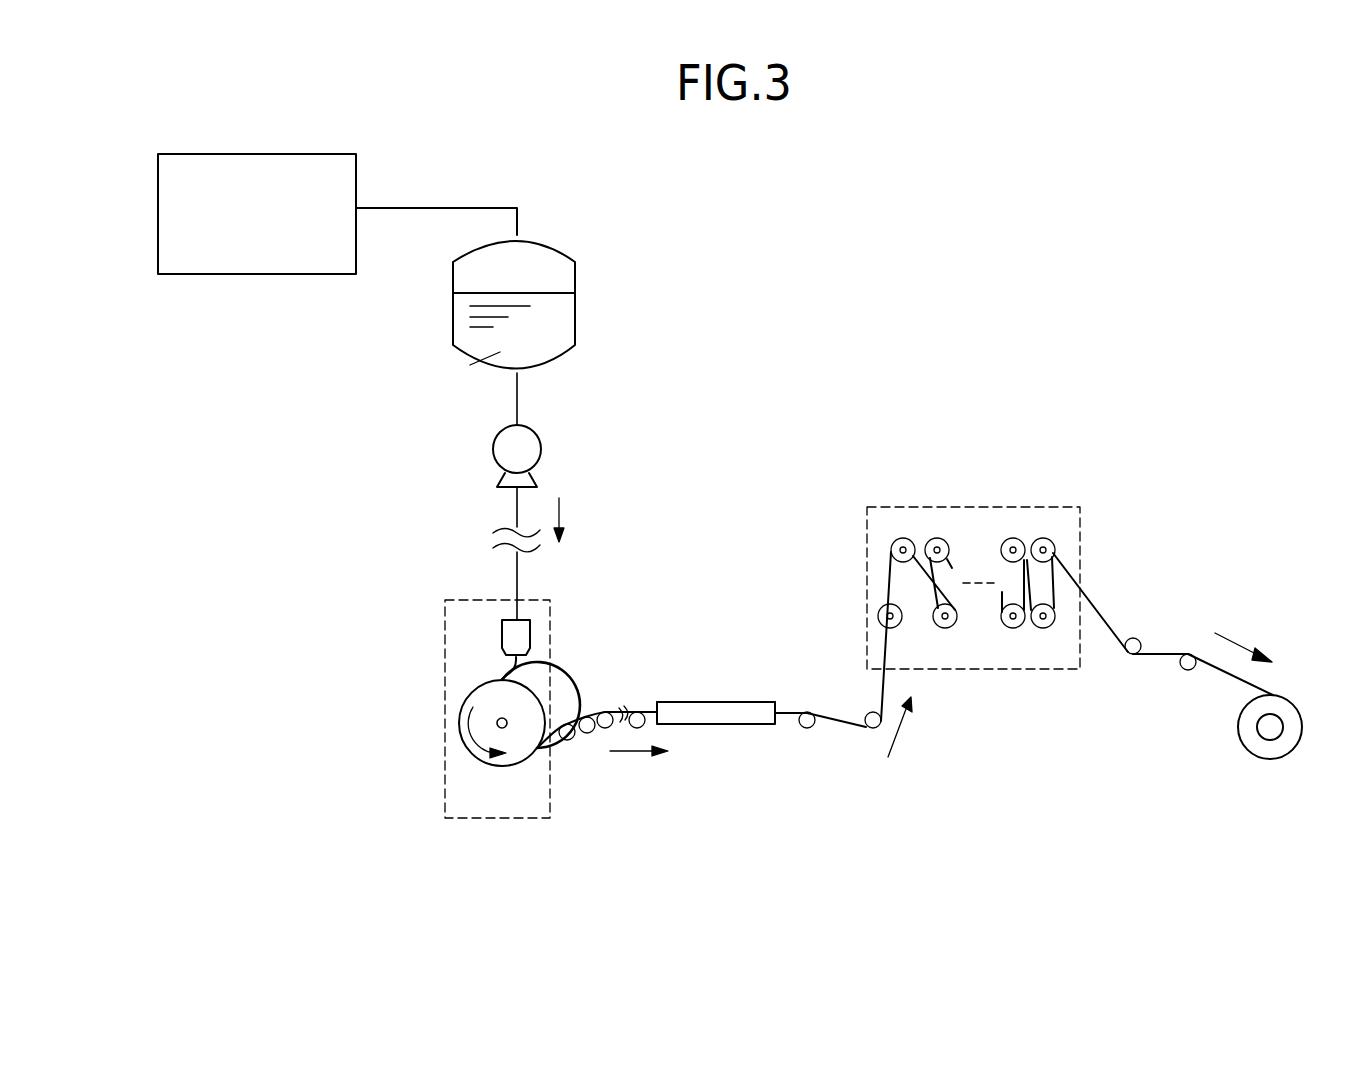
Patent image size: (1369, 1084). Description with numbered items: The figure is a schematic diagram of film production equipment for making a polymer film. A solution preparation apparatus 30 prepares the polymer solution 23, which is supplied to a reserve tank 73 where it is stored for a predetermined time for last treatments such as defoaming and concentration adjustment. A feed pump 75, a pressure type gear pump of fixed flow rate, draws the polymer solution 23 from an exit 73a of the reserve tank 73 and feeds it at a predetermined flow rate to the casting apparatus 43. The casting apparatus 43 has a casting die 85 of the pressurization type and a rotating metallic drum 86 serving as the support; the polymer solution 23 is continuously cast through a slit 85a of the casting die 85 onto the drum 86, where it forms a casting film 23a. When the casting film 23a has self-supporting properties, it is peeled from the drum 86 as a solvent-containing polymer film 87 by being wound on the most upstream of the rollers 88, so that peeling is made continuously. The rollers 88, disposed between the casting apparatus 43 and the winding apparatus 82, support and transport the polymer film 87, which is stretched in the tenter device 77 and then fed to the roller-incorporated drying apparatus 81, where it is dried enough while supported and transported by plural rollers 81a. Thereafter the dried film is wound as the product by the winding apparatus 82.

The solution preparation apparatus 30 is at (158, 210).
The reserve tank 73 is at (575, 318).
The exit 73a is at (522, 377).
The polymer solution 23 is at (500, 352).
The feed pump 75 is at (541, 449).
The casting apparatus 43 is at (441, 654).
The casting die 85 is at (502, 641).
The slit 85a is at (522, 664).
The drum 86 is at (530, 690).
The casting film 23a is at (459, 736).
The polymer film 87 is at (652, 700).
The tenter device 77 is at (736, 726).
The rollers 88 is at (848, 688).
The roller-incorporated drying apparatus 81 is at (997, 583).
The rollers 81a is at (1047, 628).
The winding apparatus 82 is at (1262, 740).